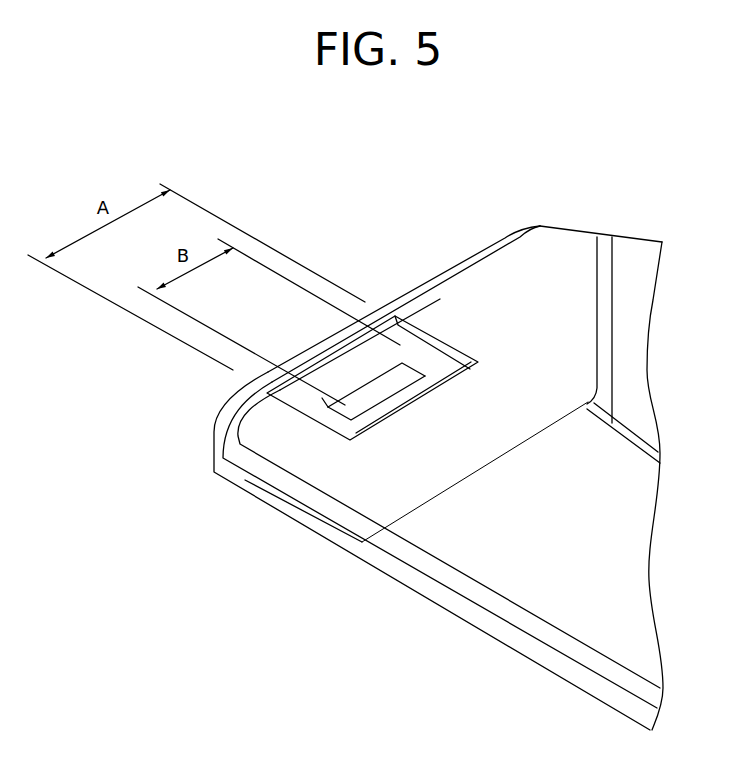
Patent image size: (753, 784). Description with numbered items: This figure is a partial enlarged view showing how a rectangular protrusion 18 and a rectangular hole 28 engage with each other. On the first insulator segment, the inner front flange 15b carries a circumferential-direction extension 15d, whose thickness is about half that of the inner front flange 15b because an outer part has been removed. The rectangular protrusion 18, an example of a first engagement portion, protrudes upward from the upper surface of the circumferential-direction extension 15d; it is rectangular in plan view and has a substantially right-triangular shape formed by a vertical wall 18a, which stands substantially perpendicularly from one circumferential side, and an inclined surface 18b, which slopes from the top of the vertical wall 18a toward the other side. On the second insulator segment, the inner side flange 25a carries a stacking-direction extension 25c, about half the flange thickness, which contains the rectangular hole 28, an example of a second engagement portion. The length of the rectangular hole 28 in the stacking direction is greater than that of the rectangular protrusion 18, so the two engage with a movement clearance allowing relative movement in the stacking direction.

The inner front flange 15b is at (583, 612).
The circumferential-direction extension 15d is at (300, 508).
The rectangular protrusion 18 is at (410, 380).
The vertical wall 18a is at (421, 405).
The inclined surface 18b is at (380, 393).
The inner side flange 25a is at (555, 260).
The stacking-direction extension 25c is at (267, 475).
The rectangular hole 28 is at (312, 343).